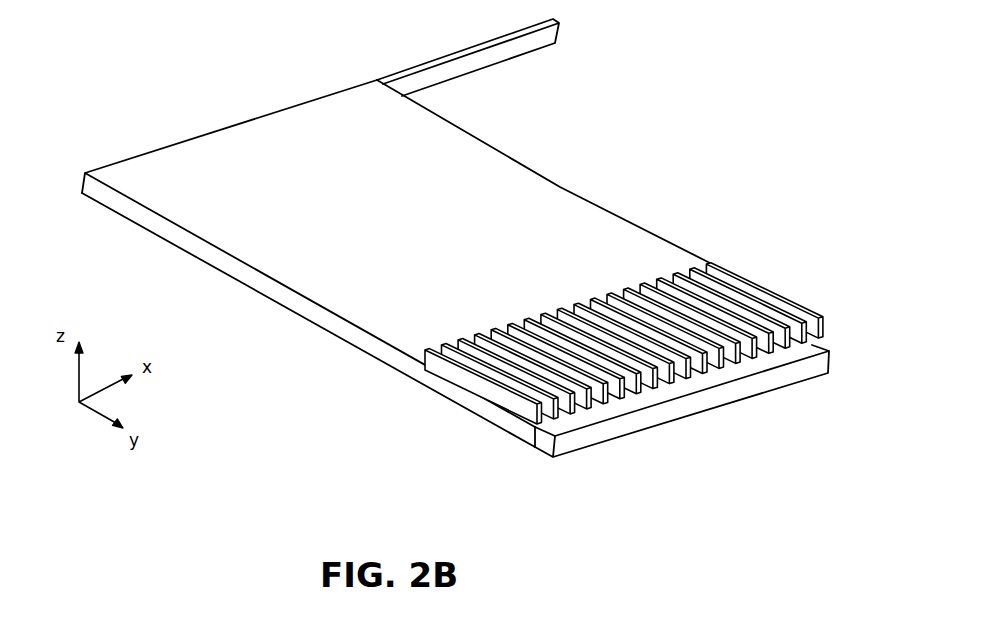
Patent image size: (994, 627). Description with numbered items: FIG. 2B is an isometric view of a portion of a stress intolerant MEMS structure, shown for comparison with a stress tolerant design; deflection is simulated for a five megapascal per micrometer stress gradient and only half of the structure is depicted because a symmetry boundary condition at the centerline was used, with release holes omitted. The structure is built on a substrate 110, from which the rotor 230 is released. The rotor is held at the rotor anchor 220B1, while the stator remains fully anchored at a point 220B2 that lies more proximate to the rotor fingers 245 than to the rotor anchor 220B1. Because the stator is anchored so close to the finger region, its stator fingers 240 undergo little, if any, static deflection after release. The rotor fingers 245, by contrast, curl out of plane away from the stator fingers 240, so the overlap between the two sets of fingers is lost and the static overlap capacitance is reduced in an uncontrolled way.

The substrate 110 is at (292, 351).
The rotor anchor 220B1 is at (557, 32).
The stator anchor point 220B2 is at (838, 382).
The rotor 230 is at (572, 202).
The stator fingers 240 is at (493, 413).
The rotor fingers 245 is at (782, 296).